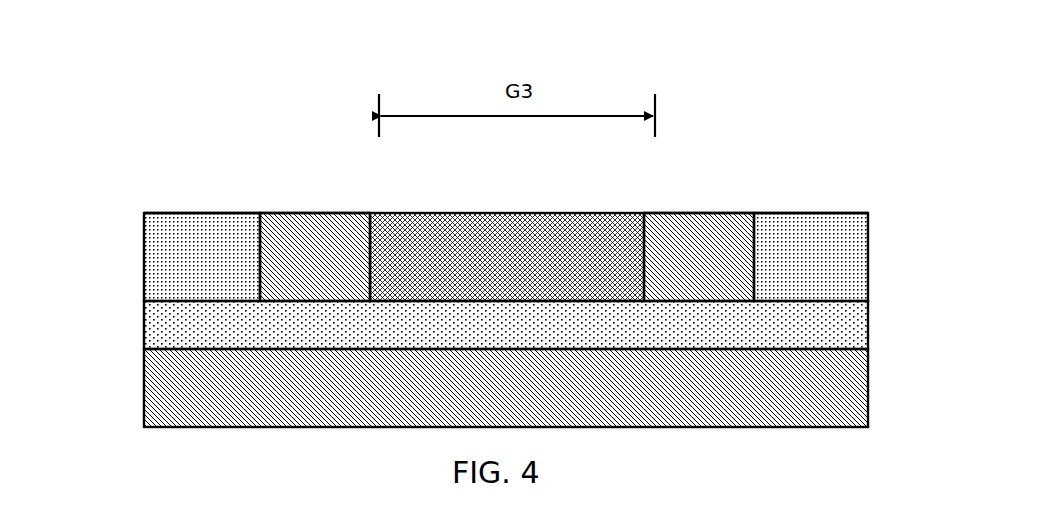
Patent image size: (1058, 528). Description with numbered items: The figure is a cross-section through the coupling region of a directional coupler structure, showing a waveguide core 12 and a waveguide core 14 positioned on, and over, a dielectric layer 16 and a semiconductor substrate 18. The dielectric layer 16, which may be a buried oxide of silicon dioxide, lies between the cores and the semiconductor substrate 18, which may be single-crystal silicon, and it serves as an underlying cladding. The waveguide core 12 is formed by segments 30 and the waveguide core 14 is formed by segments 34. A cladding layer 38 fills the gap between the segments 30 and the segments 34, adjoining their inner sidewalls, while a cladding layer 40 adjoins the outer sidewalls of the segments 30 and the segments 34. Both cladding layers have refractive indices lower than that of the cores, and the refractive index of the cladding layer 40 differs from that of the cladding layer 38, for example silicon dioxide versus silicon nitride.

The waveguide core 12 is at (248, 196).
The waveguide core 14 is at (777, 201).
The dielectric layer 16 is at (837, 333).
The semiconductor substrate 18 is at (842, 405).
The segments 30 is at (302, 279).
The segments 34 is at (732, 255).
The cladding layer 38 is at (488, 248).
The cladding layer 40 is at (207, 242).